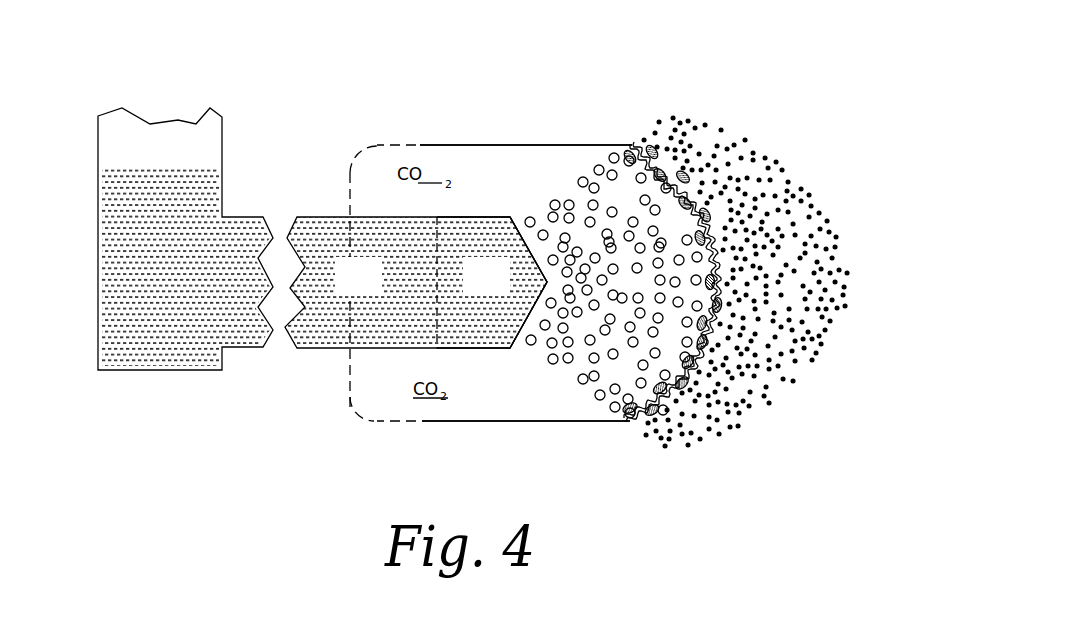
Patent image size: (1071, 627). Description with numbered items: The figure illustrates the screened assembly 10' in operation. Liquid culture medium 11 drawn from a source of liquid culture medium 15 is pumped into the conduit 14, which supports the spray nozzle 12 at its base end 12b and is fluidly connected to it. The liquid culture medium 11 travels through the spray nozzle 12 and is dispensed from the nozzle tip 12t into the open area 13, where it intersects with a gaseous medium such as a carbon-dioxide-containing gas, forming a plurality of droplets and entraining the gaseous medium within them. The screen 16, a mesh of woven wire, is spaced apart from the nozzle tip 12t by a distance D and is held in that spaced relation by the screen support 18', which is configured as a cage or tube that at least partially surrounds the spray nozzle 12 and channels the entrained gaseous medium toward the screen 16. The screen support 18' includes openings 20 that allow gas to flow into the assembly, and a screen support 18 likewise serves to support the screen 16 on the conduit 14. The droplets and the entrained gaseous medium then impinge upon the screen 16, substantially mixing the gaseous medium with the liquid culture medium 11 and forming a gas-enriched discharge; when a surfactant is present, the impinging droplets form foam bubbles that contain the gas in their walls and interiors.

The screened assembly 10' is at (442, 233).
The liquid culture medium 11 is at (140, 312).
The spray nozzle 12 is at (497, 294).
The base end 12b is at (437, 268).
The nozzle tip 12t is at (546, 282).
The open area 13 is at (572, 373).
The conduit 14 is at (369, 294).
The source of liquid culture medium 15 is at (171, 161).
The screen 16 is at (630, 143).
The screen support 18 is at (536, 456).
The screen support 18' is at (526, 118).
The openings 20 is at (395, 143).